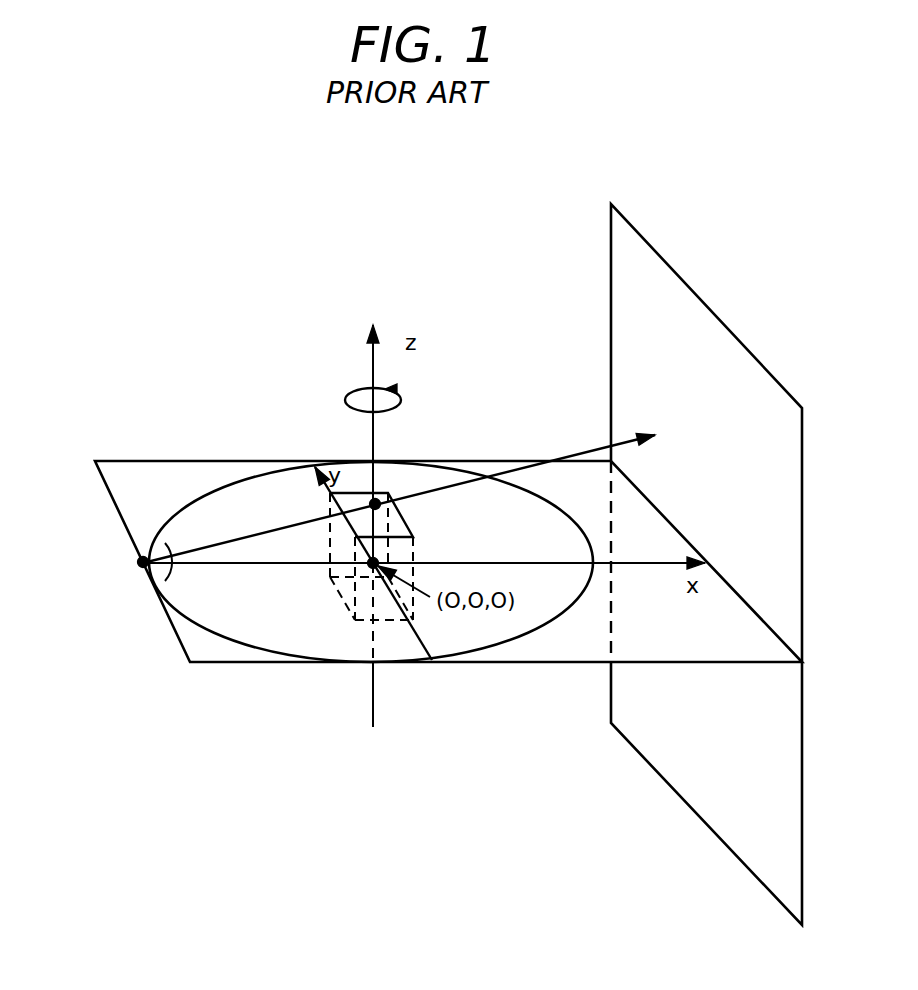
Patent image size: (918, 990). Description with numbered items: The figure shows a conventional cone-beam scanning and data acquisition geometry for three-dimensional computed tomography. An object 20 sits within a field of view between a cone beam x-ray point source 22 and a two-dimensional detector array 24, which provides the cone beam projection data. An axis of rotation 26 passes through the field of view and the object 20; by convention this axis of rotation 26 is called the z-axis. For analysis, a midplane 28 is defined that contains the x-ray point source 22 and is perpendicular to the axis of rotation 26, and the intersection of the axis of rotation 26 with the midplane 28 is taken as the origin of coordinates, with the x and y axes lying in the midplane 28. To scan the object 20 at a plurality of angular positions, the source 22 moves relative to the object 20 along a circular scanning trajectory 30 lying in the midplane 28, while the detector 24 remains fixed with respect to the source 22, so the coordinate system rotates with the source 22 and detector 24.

The object 20 is at (415, 526).
The cone beam x-ray point source 22 is at (140, 558).
The 2D detector array 24 is at (726, 339).
The axis of rotation 26 is at (380, 435).
The midplane 28 is at (540, 662).
The circular scanning trajectory 30 is at (227, 488).